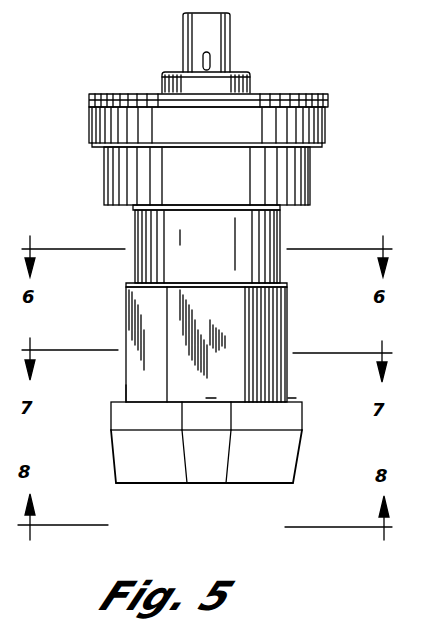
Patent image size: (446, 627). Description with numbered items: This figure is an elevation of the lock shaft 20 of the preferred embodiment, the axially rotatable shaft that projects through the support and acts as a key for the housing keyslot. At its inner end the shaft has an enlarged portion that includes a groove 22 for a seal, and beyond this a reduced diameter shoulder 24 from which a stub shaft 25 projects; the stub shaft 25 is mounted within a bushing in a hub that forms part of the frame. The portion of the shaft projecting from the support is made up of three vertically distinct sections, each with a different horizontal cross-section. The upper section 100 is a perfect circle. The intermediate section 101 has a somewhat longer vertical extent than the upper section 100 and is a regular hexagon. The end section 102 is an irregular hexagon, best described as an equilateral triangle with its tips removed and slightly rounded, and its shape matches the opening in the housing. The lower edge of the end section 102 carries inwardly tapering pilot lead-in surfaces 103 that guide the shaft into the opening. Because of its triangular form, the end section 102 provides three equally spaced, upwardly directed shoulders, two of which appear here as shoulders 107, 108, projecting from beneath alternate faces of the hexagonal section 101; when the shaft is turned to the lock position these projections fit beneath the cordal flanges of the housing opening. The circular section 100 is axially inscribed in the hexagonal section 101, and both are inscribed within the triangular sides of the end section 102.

The lock shaft 20 is at (312, 182).
The groove 22 is at (330, 103).
The reduced diameter shoulder 24 is at (250, 80).
The stub shaft 25 is at (232, 30).
The upper section 100 is at (281, 232).
The intermediate section 101 is at (288, 318).
The end section 102 is at (302, 417).
The pilot lead-in surfaces 103 is at (158, 470).
The shoulder 107 is at (125, 400).
The shoulder 108 is at (212, 402).